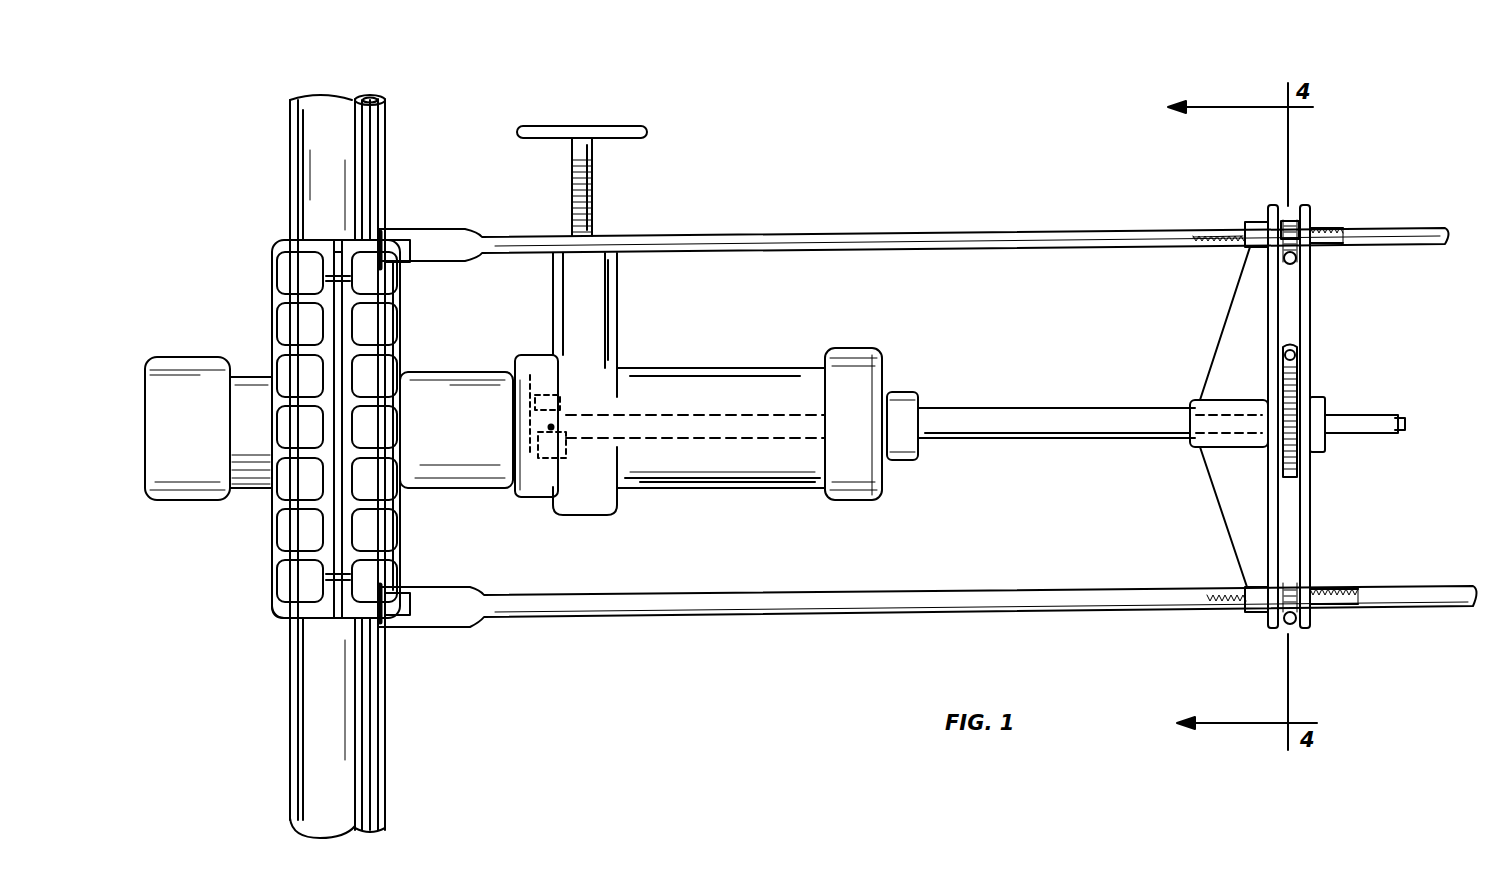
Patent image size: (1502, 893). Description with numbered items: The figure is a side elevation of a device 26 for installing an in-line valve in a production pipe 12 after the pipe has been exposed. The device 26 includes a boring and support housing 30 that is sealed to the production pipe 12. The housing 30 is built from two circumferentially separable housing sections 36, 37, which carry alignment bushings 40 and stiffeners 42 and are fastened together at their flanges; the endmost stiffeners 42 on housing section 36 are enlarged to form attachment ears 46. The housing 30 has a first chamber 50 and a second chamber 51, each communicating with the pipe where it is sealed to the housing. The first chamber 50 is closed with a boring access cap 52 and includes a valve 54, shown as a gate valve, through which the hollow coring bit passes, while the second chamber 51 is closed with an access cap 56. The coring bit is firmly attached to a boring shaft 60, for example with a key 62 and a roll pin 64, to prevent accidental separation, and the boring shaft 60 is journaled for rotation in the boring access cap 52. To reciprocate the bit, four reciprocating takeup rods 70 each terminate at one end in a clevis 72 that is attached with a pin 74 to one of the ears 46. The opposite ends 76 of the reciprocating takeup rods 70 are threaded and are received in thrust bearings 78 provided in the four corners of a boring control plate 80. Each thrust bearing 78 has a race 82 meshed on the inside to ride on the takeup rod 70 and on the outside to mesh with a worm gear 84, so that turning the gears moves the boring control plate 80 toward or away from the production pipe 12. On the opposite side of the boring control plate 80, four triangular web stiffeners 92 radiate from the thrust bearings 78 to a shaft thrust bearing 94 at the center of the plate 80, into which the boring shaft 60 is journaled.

The production pipe 12 is at (296, 140).
The device for installing an in-line valve 26 is at (967, 110).
The boring and support housing 30 is at (622, 360).
The housing section 36 is at (392, 548).
The housing section 37 is at (275, 560).
The alignment bushings 40 is at (330, 280).
The stiffeners 42 is at (276, 393).
The attachment ears 46 is at (340, 245).
The first chamber 50 is at (450, 375).
The second chamber 51 is at (250, 488).
The boring access cap 52 is at (872, 348).
The valve 54 is at (596, 208).
The access cap 56 is at (155, 360).
The boring shaft 60 is at (985, 412).
The key 62 is at (546, 370).
The roll pin 64 is at (524, 370).
The reciprocating takeup rods 70 is at (790, 235).
The clevis 72 is at (404, 240).
The pin 74 is at (380, 250).
The opposite ends 76 is at (1324, 228).
The thrust bearings 78 is at (1290, 225).
The boring control plate 80 is at (1312, 336).
The race 82 is at (1288, 228).
The worm gear 84 is at (1298, 262).
The web stiffeners 92 is at (1226, 342).
The shaft thrust bearing 94 is at (1194, 405).